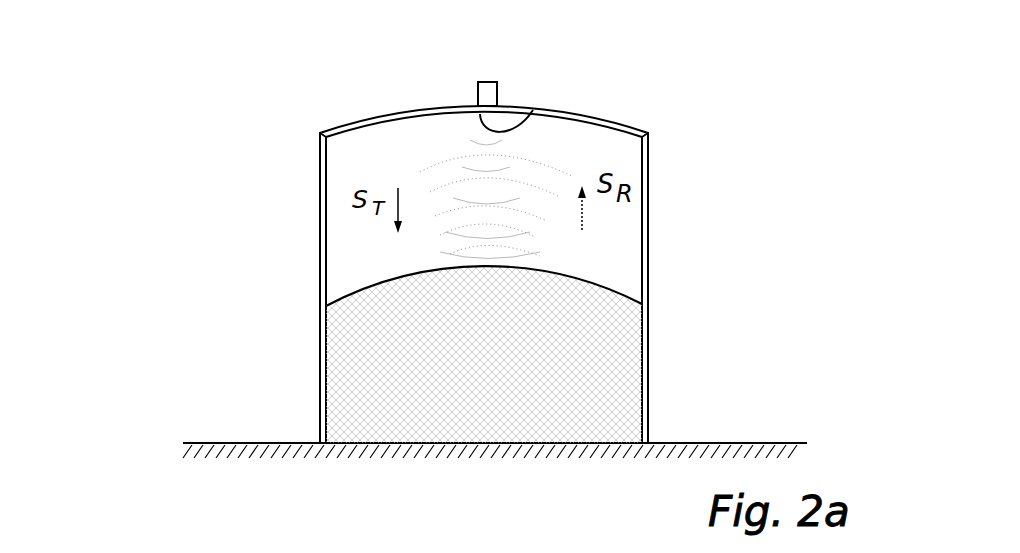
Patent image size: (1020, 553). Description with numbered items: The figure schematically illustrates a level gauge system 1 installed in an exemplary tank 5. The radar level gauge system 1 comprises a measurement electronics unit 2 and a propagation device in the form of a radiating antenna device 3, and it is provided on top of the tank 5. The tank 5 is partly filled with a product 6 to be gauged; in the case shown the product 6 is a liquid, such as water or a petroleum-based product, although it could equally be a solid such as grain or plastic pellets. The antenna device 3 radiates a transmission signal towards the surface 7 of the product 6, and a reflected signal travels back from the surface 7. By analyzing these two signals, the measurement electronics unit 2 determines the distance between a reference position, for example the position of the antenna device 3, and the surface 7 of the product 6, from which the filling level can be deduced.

The level gauge system 1 is at (492, 77).
The measurement electronics unit 2 is at (478, 93).
The radiating antenna device 3 is at (533, 110).
The tank 5 is at (650, 170).
The product 6 is at (626, 352).
The surface 7 is at (618, 293).